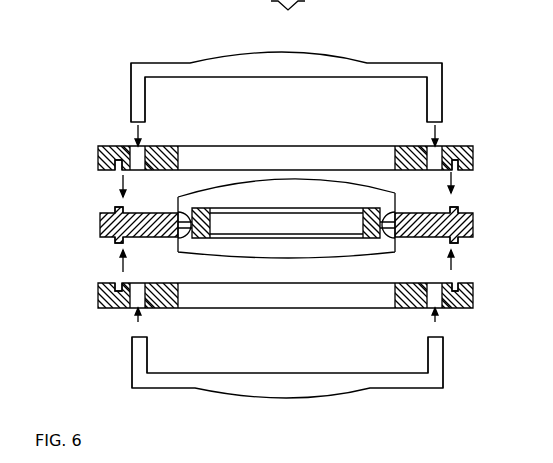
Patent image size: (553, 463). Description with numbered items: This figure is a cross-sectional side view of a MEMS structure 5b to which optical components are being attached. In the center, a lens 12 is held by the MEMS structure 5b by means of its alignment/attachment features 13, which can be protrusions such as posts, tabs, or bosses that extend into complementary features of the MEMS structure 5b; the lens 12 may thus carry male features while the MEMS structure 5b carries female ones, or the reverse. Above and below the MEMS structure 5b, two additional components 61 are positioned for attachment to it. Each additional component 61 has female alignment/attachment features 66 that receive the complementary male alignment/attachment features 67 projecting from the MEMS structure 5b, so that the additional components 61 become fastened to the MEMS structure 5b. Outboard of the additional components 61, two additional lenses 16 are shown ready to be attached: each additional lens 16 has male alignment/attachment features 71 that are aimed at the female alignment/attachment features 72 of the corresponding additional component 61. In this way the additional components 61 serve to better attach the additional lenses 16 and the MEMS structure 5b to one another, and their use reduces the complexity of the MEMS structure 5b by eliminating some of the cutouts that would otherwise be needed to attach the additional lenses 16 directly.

The additional lens 16 is at (332, 52).
The male alignment/attachment feature 71 is at (146, 98).
The additional component 61 is at (473, 153).
The female alignment/attachment feature 72 is at (145, 170).
The female alignment/attachment feature 66 is at (116, 169).
The MEMS structure 5b is at (100, 226).
The male alignment/attachment feature 67 is at (115, 210).
The alignment/attachment feature 13 is at (178, 209).
The lens 12 is at (328, 192).